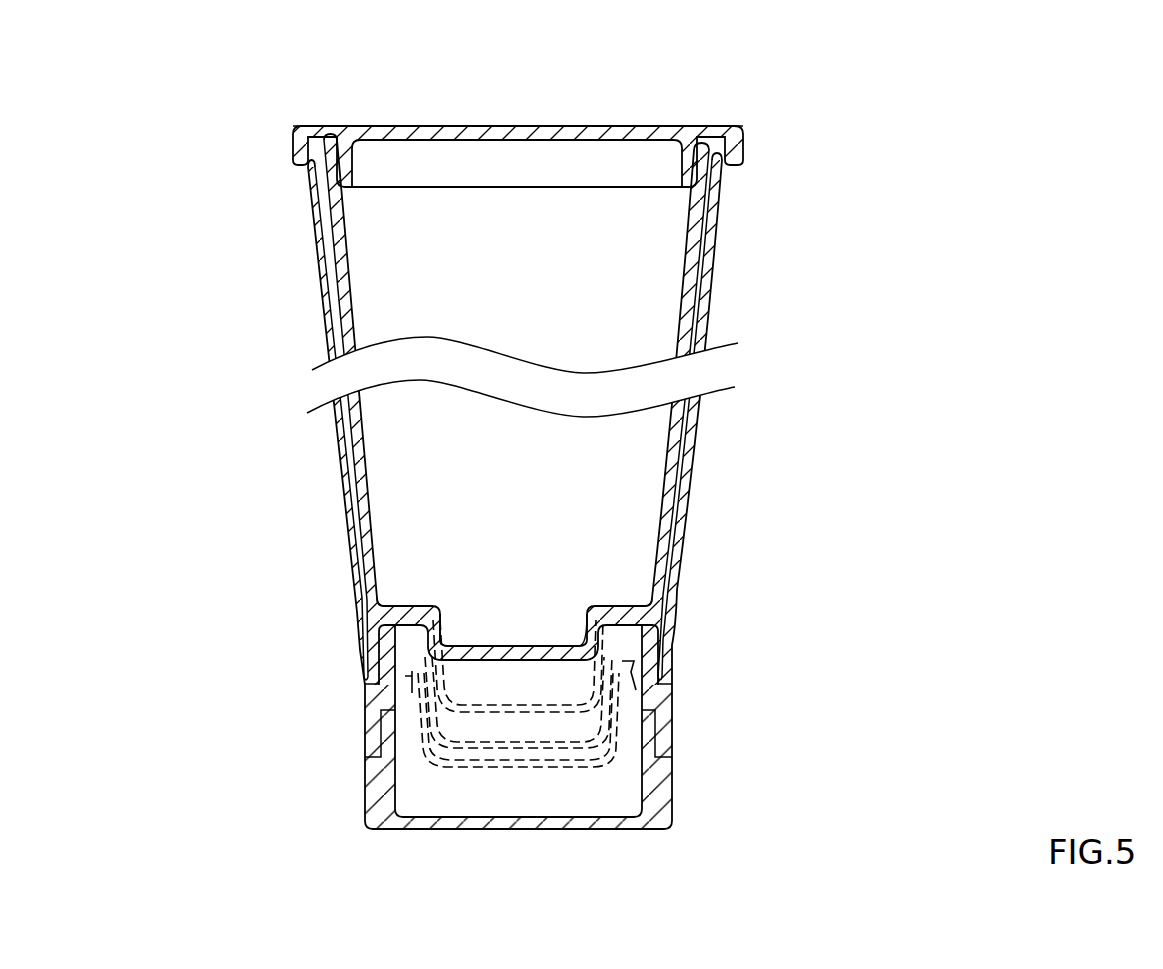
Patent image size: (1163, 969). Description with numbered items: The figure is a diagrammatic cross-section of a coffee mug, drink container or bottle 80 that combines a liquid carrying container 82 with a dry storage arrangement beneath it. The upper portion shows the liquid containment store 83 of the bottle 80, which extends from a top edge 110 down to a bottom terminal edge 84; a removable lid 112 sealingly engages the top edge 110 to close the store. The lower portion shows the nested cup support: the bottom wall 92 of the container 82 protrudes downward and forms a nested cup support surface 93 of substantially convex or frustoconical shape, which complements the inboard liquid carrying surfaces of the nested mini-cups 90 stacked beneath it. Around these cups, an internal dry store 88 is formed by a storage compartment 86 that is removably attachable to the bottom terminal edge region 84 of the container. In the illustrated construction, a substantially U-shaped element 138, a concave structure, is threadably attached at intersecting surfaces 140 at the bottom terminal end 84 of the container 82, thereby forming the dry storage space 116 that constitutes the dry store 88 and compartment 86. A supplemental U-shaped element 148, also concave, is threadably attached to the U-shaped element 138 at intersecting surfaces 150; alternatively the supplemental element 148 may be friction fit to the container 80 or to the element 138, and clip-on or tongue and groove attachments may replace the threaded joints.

The drink container 80 is at (742, 62).
The container 82 is at (716, 262).
The liquid containment store 83 is at (590, 463).
The bottom terminal edge 84 is at (676, 670).
The storage compartment 86 is at (405, 676).
The internal dry store 88 is at (640, 687).
The nested mini-cups 90 is at (428, 741).
The bottom wall 92 is at (553, 648).
The nested cup support surface 93 is at (528, 675).
The top edge 110 is at (292, 171).
The removable lid 112 is at (385, 127).
The dry storage space 116 is at (537, 800).
The U-shaped element 138 is at (664, 638).
The intersecting surfaces 140 is at (372, 657).
The supplemental U-shaped element 148 is at (362, 821).
The intersecting surfaces 150 is at (380, 740).